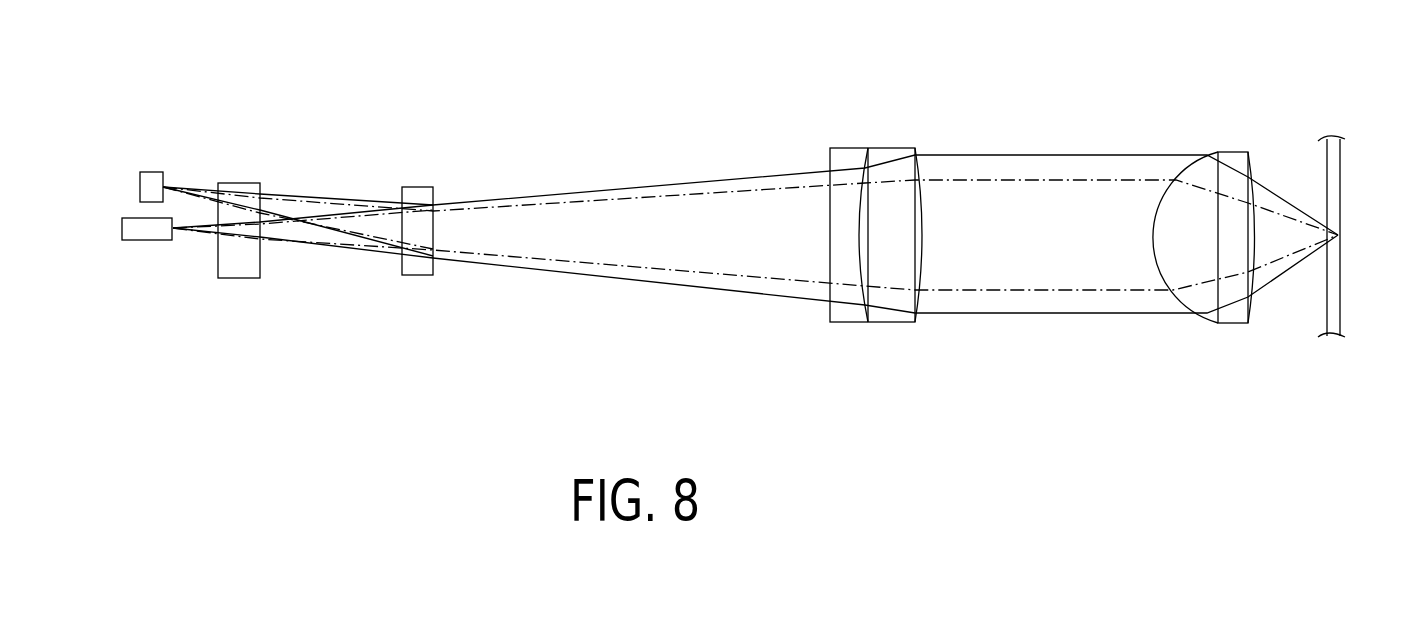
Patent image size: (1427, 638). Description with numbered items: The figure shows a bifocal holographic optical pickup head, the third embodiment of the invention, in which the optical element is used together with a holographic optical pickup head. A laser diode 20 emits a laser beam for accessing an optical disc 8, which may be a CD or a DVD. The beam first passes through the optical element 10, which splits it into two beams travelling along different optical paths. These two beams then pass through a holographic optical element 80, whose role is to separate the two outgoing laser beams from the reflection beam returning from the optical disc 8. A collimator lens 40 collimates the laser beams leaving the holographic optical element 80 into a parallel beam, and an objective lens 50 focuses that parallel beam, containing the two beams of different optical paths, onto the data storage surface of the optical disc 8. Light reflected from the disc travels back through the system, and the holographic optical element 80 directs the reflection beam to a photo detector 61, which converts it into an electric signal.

The photo detector 61 is at (155, 172).
The laser diode 20 is at (160, 242).
The optical element 10 is at (237, 178).
The holographic optical element 80 is at (423, 188).
The collimator lens 40 is at (846, 142).
The objective lens 50 is at (1232, 145).
The optical disc 8 is at (1341, 180).